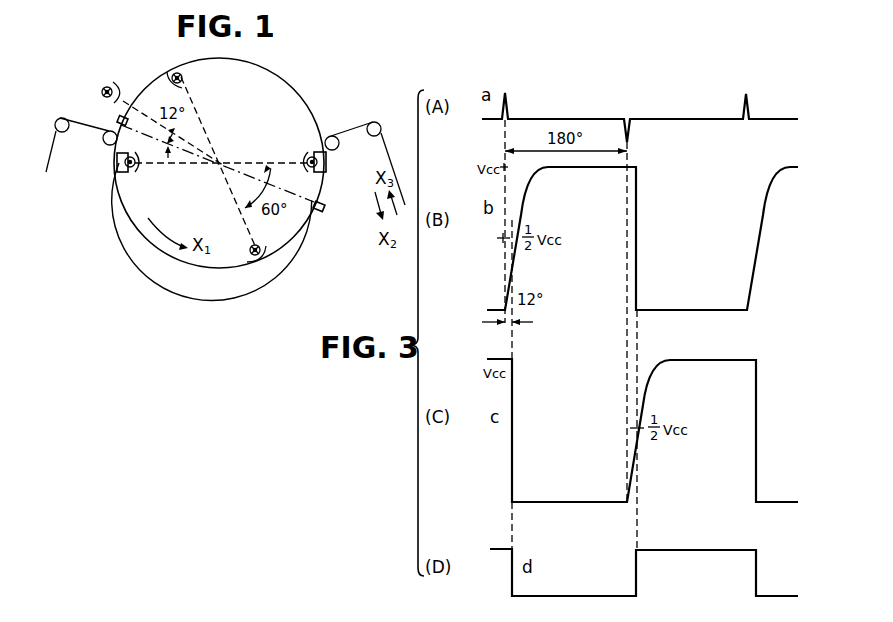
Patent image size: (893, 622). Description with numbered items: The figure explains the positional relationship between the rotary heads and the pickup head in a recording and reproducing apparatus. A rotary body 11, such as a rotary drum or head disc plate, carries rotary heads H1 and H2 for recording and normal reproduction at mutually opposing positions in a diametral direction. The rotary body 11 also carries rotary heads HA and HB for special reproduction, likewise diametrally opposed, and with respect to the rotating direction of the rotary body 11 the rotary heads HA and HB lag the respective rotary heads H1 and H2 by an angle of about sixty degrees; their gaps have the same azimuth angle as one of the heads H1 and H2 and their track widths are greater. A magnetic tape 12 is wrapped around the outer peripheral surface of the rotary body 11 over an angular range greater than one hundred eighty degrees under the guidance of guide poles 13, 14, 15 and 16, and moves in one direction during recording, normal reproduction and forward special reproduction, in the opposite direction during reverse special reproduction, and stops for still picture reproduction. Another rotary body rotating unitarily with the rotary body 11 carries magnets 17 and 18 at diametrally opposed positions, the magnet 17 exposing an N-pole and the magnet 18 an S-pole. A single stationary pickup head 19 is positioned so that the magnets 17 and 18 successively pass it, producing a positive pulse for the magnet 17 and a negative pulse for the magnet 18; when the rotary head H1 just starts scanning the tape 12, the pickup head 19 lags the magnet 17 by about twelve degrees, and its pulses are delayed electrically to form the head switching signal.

The rotary body 11 is at (282, 87).
The magnetic tape 12 is at (51, 163).
The guide pole 13 is at (65, 133).
The guide pole 14 is at (108, 146).
The guide pole 15 is at (335, 151).
The guide pole 16 is at (374, 122).
The magnet 17 is at (117, 119).
The magnet 18 is at (326, 210).
The pickup head 19 is at (108, 82).
The rotary head HA is at (176, 64).
The rotary head HB is at (253, 264).
The rotary head H1 is at (130, 174).
The rotary head H2 is at (313, 150).